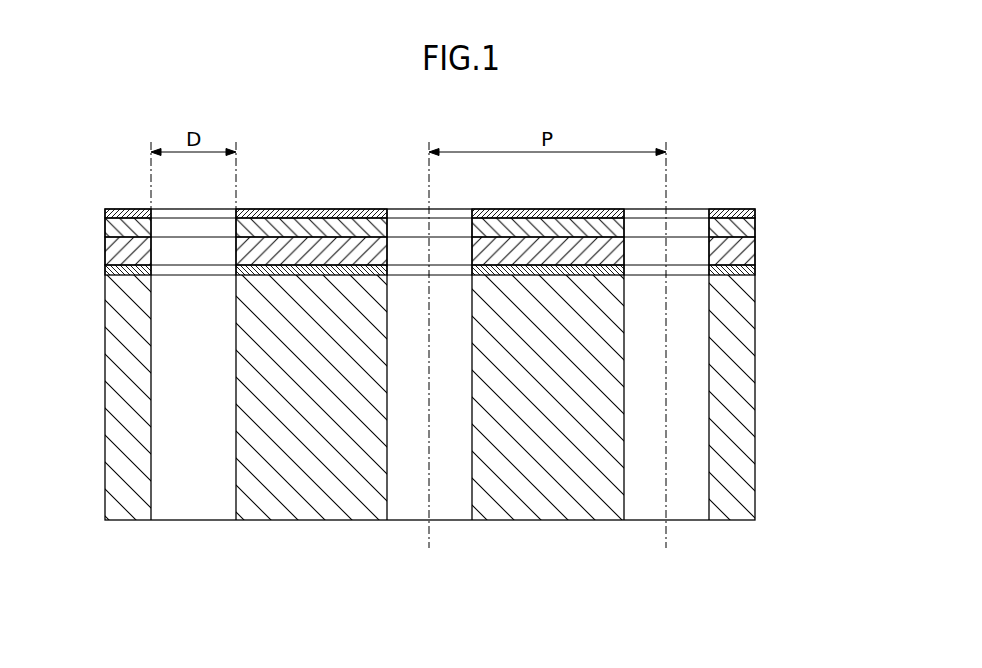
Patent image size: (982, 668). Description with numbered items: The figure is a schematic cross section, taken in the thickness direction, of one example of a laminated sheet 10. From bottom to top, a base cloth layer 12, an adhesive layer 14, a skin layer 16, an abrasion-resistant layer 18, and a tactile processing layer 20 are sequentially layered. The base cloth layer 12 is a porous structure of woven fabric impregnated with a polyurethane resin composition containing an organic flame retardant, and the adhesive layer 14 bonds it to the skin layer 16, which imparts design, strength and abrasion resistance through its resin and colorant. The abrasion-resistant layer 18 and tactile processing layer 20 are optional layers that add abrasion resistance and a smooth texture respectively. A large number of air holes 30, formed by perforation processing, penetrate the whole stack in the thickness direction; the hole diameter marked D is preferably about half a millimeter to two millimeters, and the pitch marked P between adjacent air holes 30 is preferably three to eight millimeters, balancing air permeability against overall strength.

The laminated sheet 10 is at (785, 150).
The base cloth layer 12 is at (755, 415).
The adhesive layer 14 is at (755, 270).
The skin layer 16 is at (752, 252).
The abrasion-resistant layer 18 is at (755, 222).
The tactile processing layer 20 is at (755, 213).
The air holes 30 is at (193, 507).